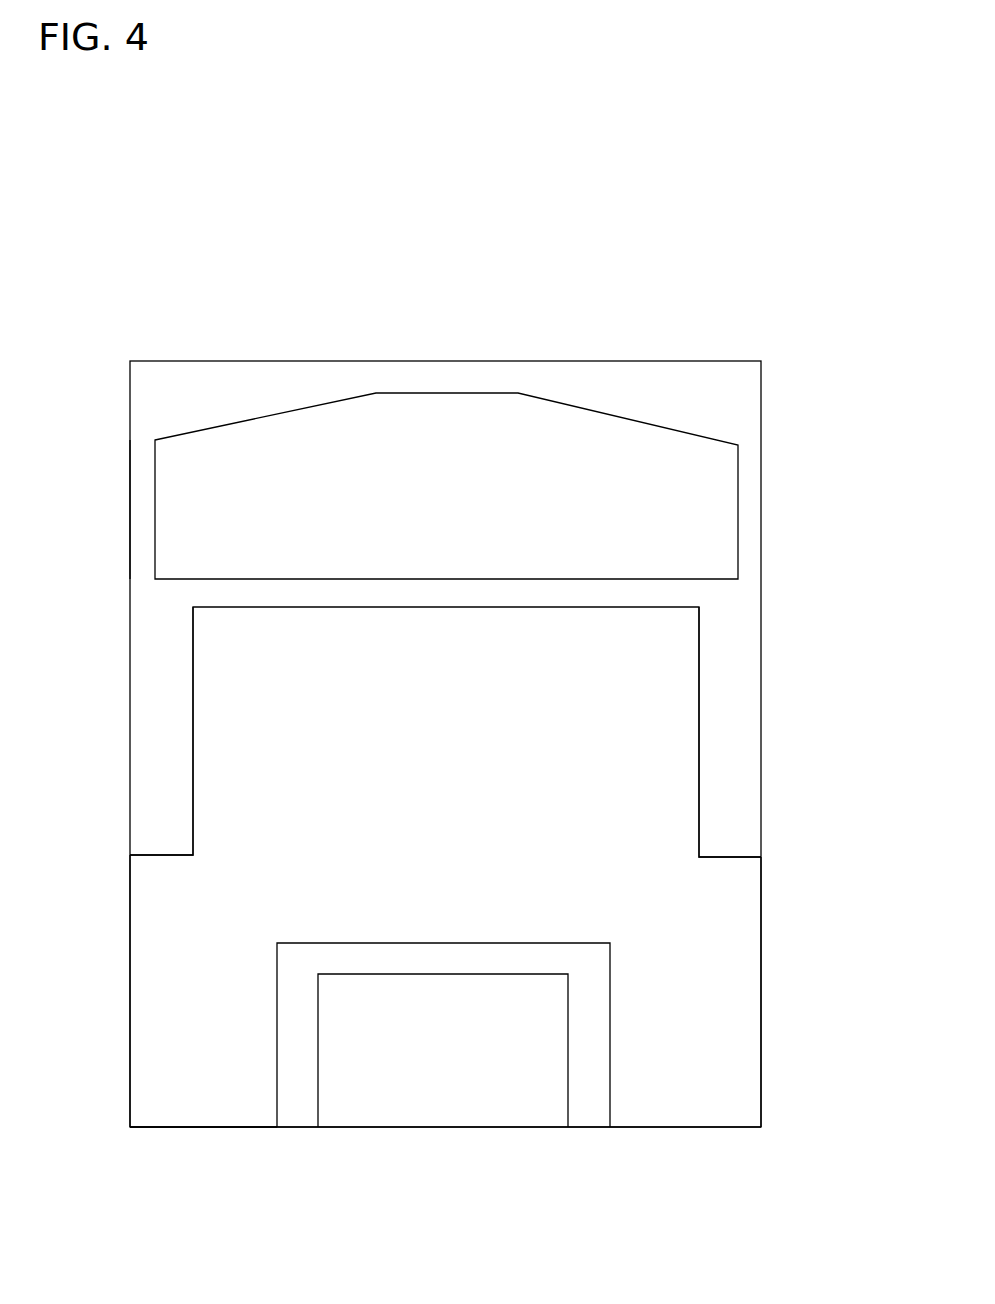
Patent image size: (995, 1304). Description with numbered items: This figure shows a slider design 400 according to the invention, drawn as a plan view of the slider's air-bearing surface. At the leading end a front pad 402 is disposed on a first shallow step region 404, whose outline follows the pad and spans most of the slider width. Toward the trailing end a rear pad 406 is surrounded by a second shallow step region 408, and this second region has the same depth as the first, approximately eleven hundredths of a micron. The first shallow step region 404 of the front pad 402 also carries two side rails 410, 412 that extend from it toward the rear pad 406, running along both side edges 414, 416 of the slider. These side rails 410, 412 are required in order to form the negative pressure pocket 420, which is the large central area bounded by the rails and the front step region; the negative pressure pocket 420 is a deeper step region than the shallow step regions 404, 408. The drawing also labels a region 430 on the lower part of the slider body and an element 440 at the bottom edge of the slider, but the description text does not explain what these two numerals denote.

The slider design 400 is at (103, 332).
The front pad 402 is at (200, 489).
The first shallow step region 404 is at (142, 552).
The rear pad 406 is at (492, 1108).
The second shallow step region 408 is at (595, 1075).
The side rail 410 is at (155, 740).
The side rail 412 is at (730, 773).
The side edge 414 is at (130, 928).
The side edge 416 is at (761, 933).
The negative pressure pocket 420 is at (573, 685).
The lower region 430 is at (157, 1068).
The substrate 440 is at (189, 1127).